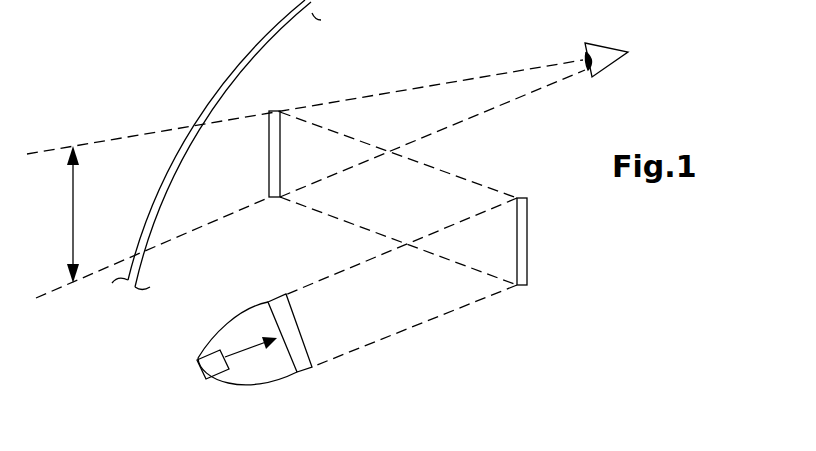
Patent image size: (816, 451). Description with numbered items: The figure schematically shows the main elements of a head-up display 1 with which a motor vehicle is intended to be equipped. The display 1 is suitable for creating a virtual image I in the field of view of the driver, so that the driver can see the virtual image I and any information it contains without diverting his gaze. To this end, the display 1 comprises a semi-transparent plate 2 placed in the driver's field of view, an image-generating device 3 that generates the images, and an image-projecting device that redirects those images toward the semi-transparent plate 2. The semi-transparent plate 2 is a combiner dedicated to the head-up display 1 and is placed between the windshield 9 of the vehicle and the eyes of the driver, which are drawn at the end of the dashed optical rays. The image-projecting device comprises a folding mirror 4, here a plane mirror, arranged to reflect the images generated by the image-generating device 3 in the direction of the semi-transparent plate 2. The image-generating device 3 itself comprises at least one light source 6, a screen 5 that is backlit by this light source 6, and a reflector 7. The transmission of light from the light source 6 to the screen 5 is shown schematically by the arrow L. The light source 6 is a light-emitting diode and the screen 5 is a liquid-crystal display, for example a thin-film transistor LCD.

The head-up display 1 is at (413, 331).
The semi-transparent plate 2 is at (271, 110).
The image-generating device 3 is at (240, 372).
The folding mirror 4 is at (527, 224).
The screen 5 is at (303, 373).
The light source 6 is at (200, 366).
The reflector 7 is at (245, 386).
The windshield 9 is at (253, 47).
The virtual image I is at (72, 198).
The arrow L is at (251, 339).